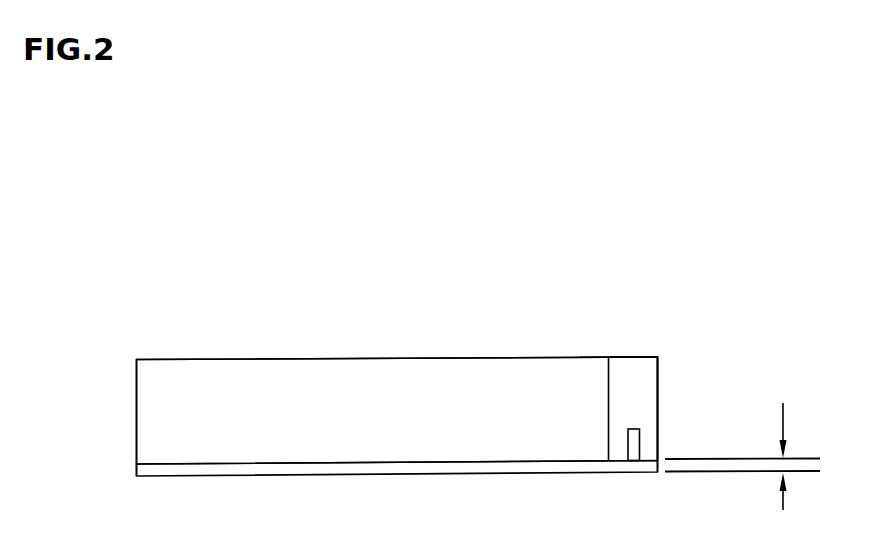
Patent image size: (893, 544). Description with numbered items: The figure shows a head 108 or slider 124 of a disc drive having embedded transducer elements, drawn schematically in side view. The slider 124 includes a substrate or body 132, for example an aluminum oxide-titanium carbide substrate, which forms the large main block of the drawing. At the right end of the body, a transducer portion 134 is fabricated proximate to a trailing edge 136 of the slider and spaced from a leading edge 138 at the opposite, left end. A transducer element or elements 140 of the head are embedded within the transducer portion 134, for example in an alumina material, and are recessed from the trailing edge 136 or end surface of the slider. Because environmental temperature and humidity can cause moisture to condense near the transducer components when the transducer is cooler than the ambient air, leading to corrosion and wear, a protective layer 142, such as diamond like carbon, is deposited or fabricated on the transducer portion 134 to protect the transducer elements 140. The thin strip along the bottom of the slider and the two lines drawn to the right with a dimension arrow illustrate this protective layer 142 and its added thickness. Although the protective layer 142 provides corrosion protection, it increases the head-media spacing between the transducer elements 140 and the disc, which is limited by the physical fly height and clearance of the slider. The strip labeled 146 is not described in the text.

The head 108 is at (584, 346).
The slider 124 is at (490, 346).
The substrate or body 132 is at (208, 367).
The transducer portion 134 is at (636, 355).
The trailing edge 136 is at (658, 450).
The leading edge 138 is at (136, 460).
The transducer element 140 is at (633, 428).
The protective layer 142 is at (784, 424).
The bottom layer 146 is at (563, 463).